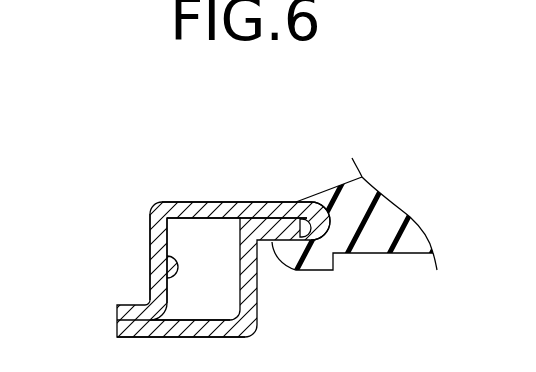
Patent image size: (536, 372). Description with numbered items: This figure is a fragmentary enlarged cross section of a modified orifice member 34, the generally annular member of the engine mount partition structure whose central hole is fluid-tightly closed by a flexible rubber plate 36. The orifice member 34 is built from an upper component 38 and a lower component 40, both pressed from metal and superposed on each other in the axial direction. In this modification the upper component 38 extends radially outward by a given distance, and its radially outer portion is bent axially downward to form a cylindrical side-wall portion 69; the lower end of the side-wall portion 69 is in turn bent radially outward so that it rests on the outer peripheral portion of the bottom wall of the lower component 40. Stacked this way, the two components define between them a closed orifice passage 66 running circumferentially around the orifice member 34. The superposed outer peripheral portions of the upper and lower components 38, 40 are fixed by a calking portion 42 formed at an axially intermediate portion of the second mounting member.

The orifice member 34 is at (242, 182).
The flexible rubber plate 36 is at (377, 212).
The upper component 38 is at (190, 212).
The lower component 40 is at (252, 330).
The calking portion 42 is at (317, 198).
The orifice passage 66 is at (165, 258).
The side-wall portion 69 is at (157, 278).